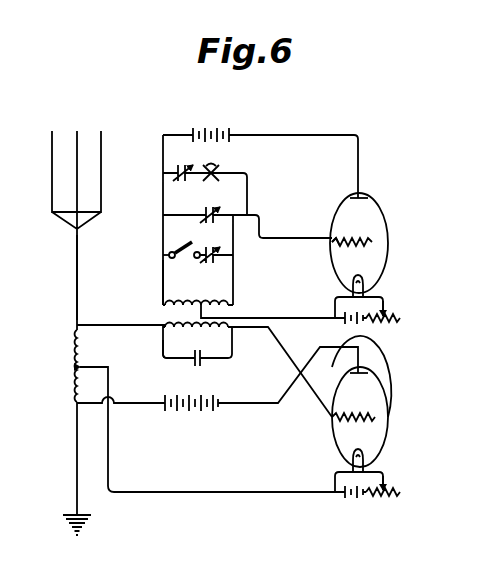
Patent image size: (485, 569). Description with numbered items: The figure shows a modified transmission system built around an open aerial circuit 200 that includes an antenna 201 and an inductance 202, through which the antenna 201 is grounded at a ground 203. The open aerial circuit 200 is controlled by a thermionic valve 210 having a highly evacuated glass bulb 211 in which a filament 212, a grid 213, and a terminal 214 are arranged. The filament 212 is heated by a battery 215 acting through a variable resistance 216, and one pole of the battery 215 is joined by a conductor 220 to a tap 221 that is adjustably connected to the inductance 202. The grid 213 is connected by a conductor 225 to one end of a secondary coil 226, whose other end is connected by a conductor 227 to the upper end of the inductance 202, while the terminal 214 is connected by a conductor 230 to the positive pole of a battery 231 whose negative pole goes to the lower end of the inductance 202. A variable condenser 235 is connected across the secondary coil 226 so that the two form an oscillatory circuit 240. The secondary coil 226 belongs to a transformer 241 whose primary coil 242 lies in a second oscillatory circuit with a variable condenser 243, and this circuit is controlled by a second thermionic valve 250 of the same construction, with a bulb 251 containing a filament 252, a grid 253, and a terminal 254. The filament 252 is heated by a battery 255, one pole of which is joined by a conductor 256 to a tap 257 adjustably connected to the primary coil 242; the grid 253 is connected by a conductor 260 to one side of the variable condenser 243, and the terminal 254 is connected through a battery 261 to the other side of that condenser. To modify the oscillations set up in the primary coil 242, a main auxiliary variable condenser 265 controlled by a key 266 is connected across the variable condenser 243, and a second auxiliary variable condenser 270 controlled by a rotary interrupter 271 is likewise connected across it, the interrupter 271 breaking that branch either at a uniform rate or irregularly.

The open aerial circuit 200 is at (100, 230).
The antenna 201 is at (75, 263).
The inductance 202 is at (72, 350).
The ground 203 is at (73, 516).
The thermionic valve 210 is at (388, 398).
The glass bulb 211 is at (386, 387).
The filament 212 is at (366, 453).
The grid 213 is at (376, 417).
The terminal 214 is at (369, 374).
The battery 215 is at (360, 499).
The variable resistance 216 is at (386, 490).
The conductor 220 is at (224, 493).
The tap 221 is at (84, 365).
The conductor 225 is at (309, 392).
The secondary coil 226 is at (166, 357).
The conductor 227 is at (160, 326).
The conductor 230 is at (270, 405).
The battery 231 is at (200, 410).
The variable condenser 235 is at (203, 363).
The oscillatory circuit 240 is at (197, 341).
The transformer 241 is at (163, 302).
The primary coil 242 is at (163, 283).
The variable condenser 243 is at (204, 208).
The thermionic valve 250 is at (388, 250).
The bulb 251 is at (388, 231).
The filament 252 is at (366, 280).
The grid 253 is at (344, 246).
The terminal 254 is at (369, 198).
The battery 255 is at (372, 322).
The conductor 256 is at (290, 317).
The tap 257 is at (208, 302).
The conductor 260 is at (297, 228).
The battery 261 is at (212, 130).
The main auxiliary variable condenser 265 is at (218, 259).
The key 266 is at (182, 250).
The second auxiliary variable condenser 270 is at (177, 168).
The rotary interrupter 271 is at (221, 172).